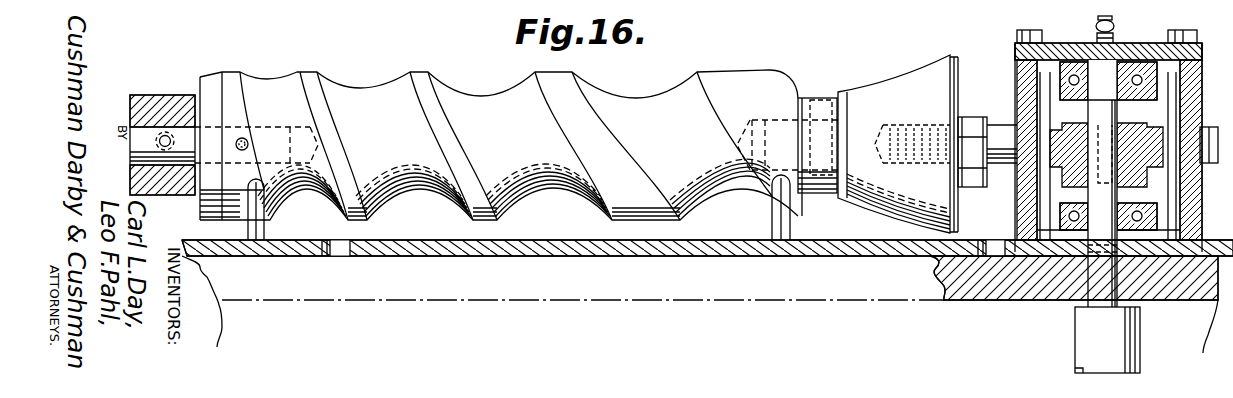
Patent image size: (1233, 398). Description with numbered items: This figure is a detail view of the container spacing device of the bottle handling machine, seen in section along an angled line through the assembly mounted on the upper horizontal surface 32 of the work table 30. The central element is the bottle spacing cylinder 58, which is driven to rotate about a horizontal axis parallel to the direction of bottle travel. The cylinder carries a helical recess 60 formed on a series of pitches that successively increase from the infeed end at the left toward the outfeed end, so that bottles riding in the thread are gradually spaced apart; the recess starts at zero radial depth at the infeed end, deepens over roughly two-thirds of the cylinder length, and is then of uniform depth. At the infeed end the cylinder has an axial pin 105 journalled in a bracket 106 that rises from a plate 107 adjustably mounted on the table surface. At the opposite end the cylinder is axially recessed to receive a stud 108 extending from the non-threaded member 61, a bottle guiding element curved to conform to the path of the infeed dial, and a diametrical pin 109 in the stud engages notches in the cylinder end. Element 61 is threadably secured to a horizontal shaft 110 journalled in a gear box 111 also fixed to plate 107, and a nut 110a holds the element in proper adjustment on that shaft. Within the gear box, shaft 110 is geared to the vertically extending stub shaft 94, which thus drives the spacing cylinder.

The work table 30 is at (936, 268).
The upper horizontal surface 32 is at (517, 243).
The bottle spacing cylinder 58 is at (403, 148).
The helical recess 60 is at (478, 97).
The non-threaded member 61 is at (886, 82).
The stub shaft 94 is at (1093, 304).
The axial pin 105 is at (143, 137).
The bracket 106 is at (181, 93).
The plate 107 is at (762, 242).
The stud 108 is at (742, 166).
The diametrical pin 109 is at (813, 115).
The horizontal shaft 110 is at (1007, 127).
The nut 110a is at (973, 170).
The gear box 111 is at (1147, 44).